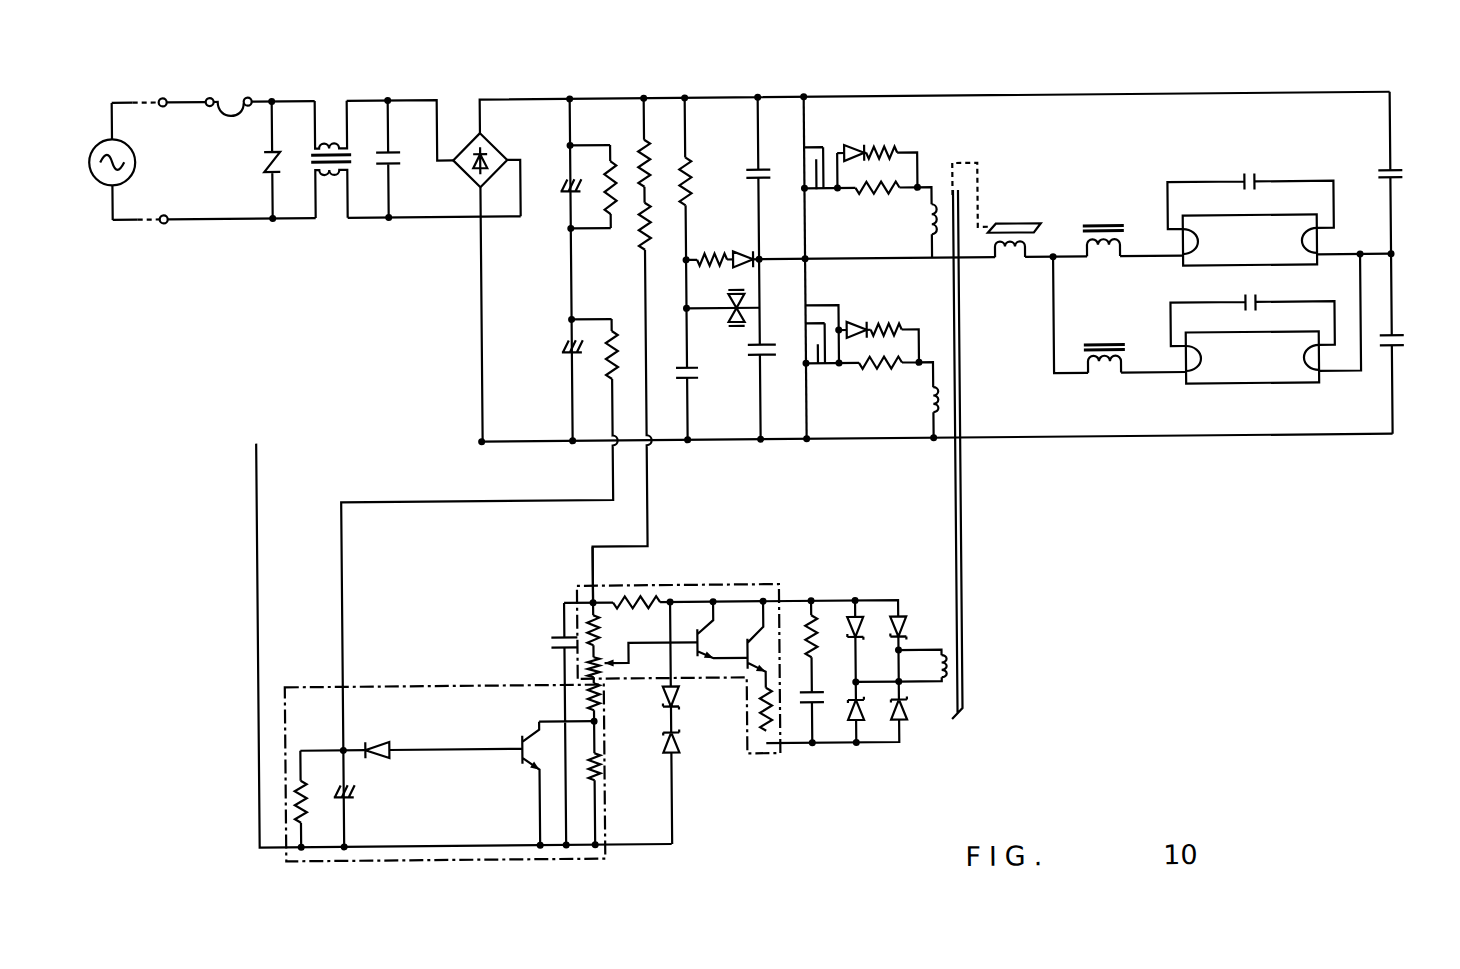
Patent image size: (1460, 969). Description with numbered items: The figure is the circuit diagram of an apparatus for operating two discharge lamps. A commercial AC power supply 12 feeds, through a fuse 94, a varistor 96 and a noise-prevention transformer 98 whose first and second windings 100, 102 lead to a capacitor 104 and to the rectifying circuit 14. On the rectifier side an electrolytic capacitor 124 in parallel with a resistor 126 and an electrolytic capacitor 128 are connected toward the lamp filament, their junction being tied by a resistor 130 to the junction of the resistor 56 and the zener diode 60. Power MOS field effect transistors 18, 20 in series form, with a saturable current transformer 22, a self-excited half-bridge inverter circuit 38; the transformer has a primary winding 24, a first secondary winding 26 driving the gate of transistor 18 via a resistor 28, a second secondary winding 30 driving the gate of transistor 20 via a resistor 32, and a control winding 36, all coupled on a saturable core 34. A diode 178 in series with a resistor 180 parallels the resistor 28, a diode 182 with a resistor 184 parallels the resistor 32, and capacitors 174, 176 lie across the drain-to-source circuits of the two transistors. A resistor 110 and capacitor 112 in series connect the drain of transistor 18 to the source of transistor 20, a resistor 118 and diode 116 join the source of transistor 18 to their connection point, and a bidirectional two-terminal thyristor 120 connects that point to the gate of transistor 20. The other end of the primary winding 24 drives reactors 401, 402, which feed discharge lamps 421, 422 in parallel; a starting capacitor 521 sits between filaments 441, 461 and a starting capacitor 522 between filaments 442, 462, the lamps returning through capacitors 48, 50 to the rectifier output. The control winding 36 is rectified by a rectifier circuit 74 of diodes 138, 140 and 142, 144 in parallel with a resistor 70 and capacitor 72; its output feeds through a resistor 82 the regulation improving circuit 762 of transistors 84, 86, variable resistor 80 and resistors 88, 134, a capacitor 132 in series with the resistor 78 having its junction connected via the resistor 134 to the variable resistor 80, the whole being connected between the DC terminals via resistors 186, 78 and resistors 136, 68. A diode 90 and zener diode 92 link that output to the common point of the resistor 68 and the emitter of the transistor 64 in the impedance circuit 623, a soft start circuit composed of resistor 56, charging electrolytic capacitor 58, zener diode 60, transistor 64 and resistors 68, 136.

The commercial AC power supply 12 is at (98, 142).
The fuse 94 is at (233, 97).
The varistor 96 is at (268, 158).
The transformer for noise prevention 98 is at (350, 165).
The first winding 100 is at (330, 135).
The second winding 102 is at (330, 178).
The capacitor 104 is at (397, 162).
The rectifying circuit 14 is at (497, 140).
The electrolytic capacitor 124 is at (568, 190).
The resistor 126 is at (615, 205).
The electrolytic capacitor 128 is at (562, 335).
The resistor 130 is at (605, 362).
The resistor 186 is at (650, 142).
The resistor 78 is at (655, 245).
The resistor 110 is at (695, 190).
The diode 116 is at (745, 252).
The resistor 118 is at (714, 258).
The capacitor 174 is at (766, 165).
The capacitor 176 is at (758, 352).
The capacitor 112 is at (696, 380).
The bidirectional two-terminal thyristor 120 is at (735, 322).
The power MOS type field effect transistor 18 is at (826, 150).
The diode 178 is at (855, 148).
The resistor 180 is at (885, 152).
The resistor 28 is at (870, 192).
The first secondary winding 26 is at (934, 224).
The power MOS type field effect transistor 20 is at (826, 370).
The diode 182 is at (856, 326).
The resistor 184 is at (890, 328).
The resistor 32 is at (882, 368).
The second secondary winding 30 is at (936, 398).
The self-excited half-bridge type inverter circuit 38 is at (1020, 379).
The saturable core 34 is at (966, 490).
The saturable current transformer 22 is at (948, 447).
The primary winding 24 is at (1012, 262).
The reactor 401 is at (1100, 250).
The reactor 402 is at (1100, 368).
The discharge lamp 421 is at (1222, 268).
The discharge lamp 422 is at (1245, 384).
The filament 441 is at (1185, 255).
The filament 442 is at (1190, 378).
The filament 461 is at (1305, 232).
The filament 462 is at (1310, 378).
The starting capacitor 521 is at (1255, 138).
The starting capacitor 522 is at (1280, 285).
The capacitor 48 is at (1400, 175).
The capacitor 50 is at (1395, 340).
The regulation improving circuit 762 is at (580, 588).
The resistor 82 is at (640, 600).
The transistor 84 is at (700, 640).
The transistor 86 is at (748, 655).
The diode 138 is at (850, 615).
The diode 142 is at (900, 615).
The capacitor 132 is at (553, 637).
The resistor 134 is at (600, 625).
The variable resistor 80 is at (590, 665).
The resistor 136 is at (590, 700).
The resistor 68 is at (598, 770).
The diode 90 is at (662, 690).
The zener diode 92 is at (673, 750).
The resistor 88 is at (760, 710).
The resistor 70 is at (815, 640).
The capacitor 72 is at (815, 705).
The diode 140 is at (855, 722).
The diode 144 is at (905, 720).
The rectifier circuit 74 is at (872, 706).
The control winding 36 is at (963, 660).
The impedance circuit 623 is at (300, 682).
The resistor 56 is at (296, 795).
The electrolytic capacitor for charging 58 is at (348, 795).
The zener diode 60 is at (375, 757).
The transistor 64 is at (515, 757).